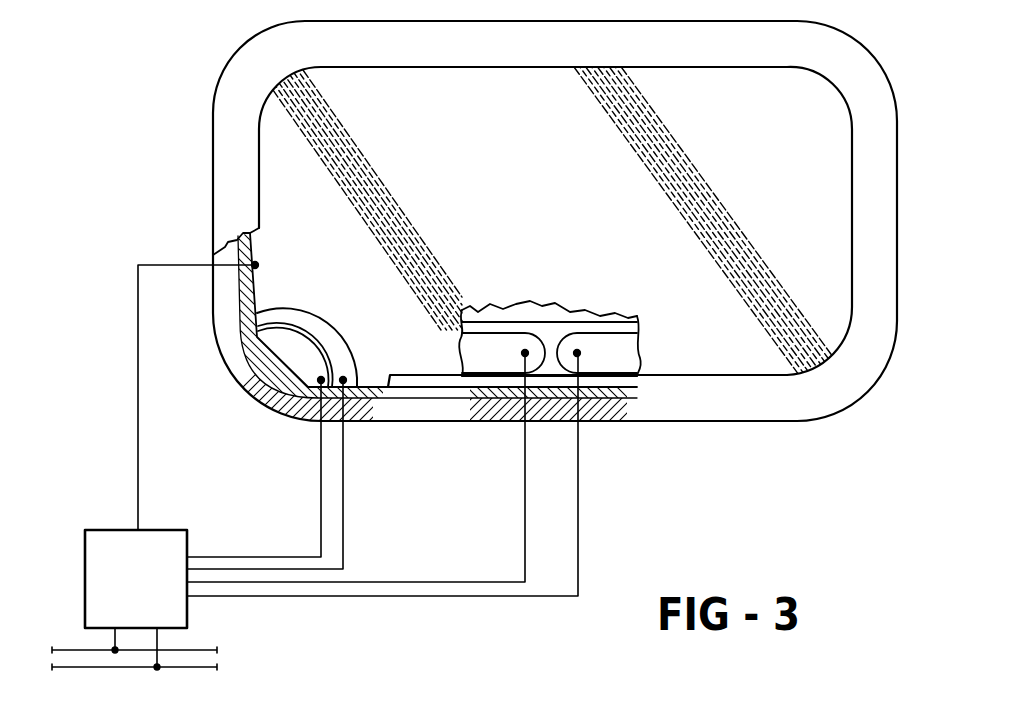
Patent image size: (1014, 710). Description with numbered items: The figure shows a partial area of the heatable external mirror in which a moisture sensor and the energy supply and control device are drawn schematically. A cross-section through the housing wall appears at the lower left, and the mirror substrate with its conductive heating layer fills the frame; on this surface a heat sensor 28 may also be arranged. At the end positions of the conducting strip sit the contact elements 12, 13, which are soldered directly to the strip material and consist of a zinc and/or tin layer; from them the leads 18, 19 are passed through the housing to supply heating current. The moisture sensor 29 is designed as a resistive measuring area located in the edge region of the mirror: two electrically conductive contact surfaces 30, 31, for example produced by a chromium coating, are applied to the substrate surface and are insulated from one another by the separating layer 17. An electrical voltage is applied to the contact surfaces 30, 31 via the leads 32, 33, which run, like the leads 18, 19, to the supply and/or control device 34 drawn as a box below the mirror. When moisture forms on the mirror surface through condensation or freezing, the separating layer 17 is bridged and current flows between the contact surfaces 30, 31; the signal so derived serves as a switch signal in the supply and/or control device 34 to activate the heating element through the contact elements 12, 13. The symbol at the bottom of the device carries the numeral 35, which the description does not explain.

The contact element 12 is at (500, 342).
The contact element 13 is at (580, 342).
The separating layer 17 is at (330, 355).
The lead 18 is at (490, 599).
The lead 19 is at (470, 580).
The heat sensor 28 is at (552, 221).
The moisture sensor 29 is at (296, 303).
The contact surface 30 is at (321, 335).
The contact surface 31 is at (248, 393).
The lead 32 is at (343, 503).
The lead 33 is at (321, 508).
The supply and/or control device 34 is at (88, 556).
The ground connection 35 is at (70, 651).